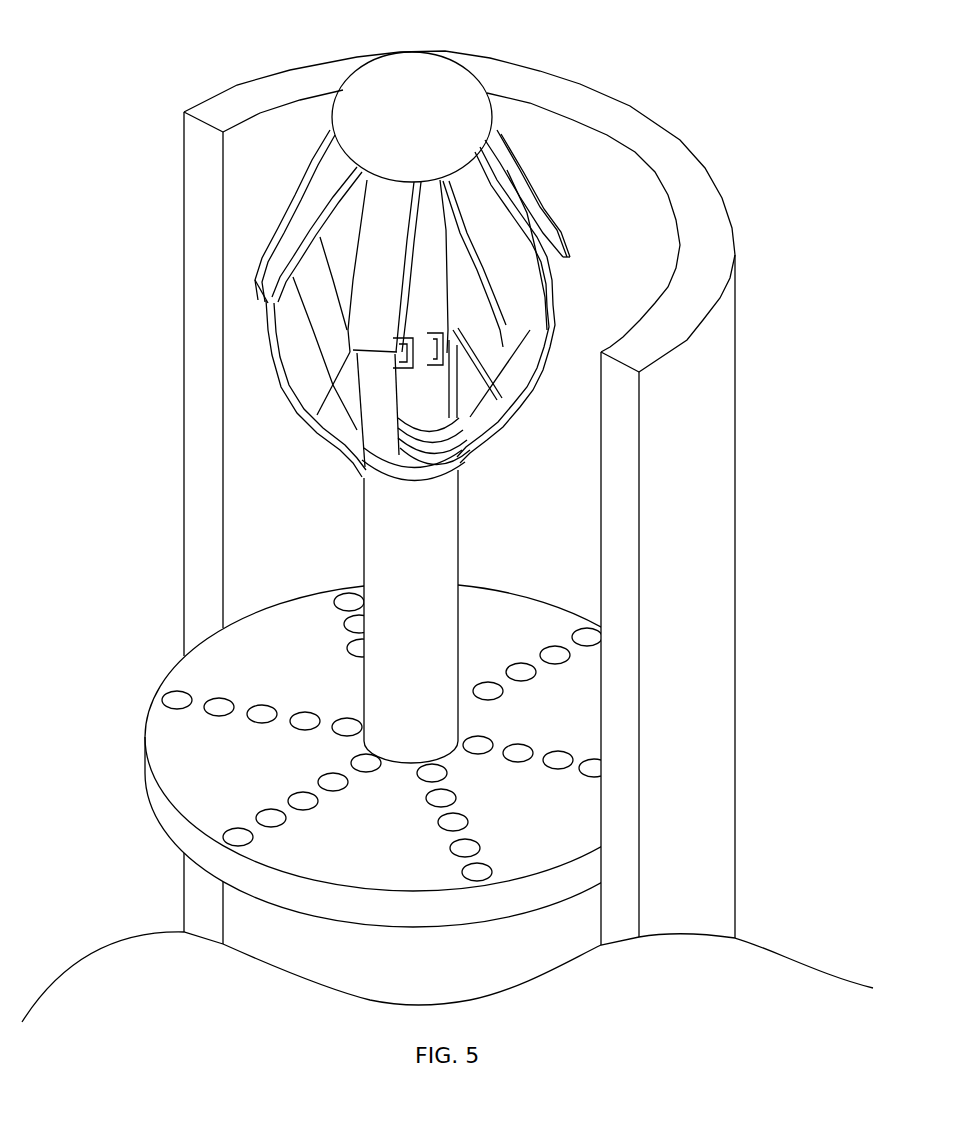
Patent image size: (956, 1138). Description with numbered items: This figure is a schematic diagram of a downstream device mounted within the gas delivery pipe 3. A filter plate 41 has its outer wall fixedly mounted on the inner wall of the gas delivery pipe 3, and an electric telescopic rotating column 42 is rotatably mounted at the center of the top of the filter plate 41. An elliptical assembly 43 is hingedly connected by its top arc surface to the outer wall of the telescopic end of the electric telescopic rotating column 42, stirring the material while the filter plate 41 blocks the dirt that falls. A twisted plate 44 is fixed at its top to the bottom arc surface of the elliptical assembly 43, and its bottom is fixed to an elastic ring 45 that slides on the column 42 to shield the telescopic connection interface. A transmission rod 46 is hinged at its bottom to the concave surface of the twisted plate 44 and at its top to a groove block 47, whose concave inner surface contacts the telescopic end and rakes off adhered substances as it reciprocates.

The gas delivery pipe 3 is at (213, 150).
The filter plate 41 is at (580, 697).
The electric telescopic rotating column 42 is at (430, 615).
The elliptical assembly 43 is at (445, 143).
The twisted plate 44 is at (380, 440).
The elastic ring 45 is at (370, 474).
The transmission rod 46 is at (478, 412).
The groove block 47 is at (440, 350).